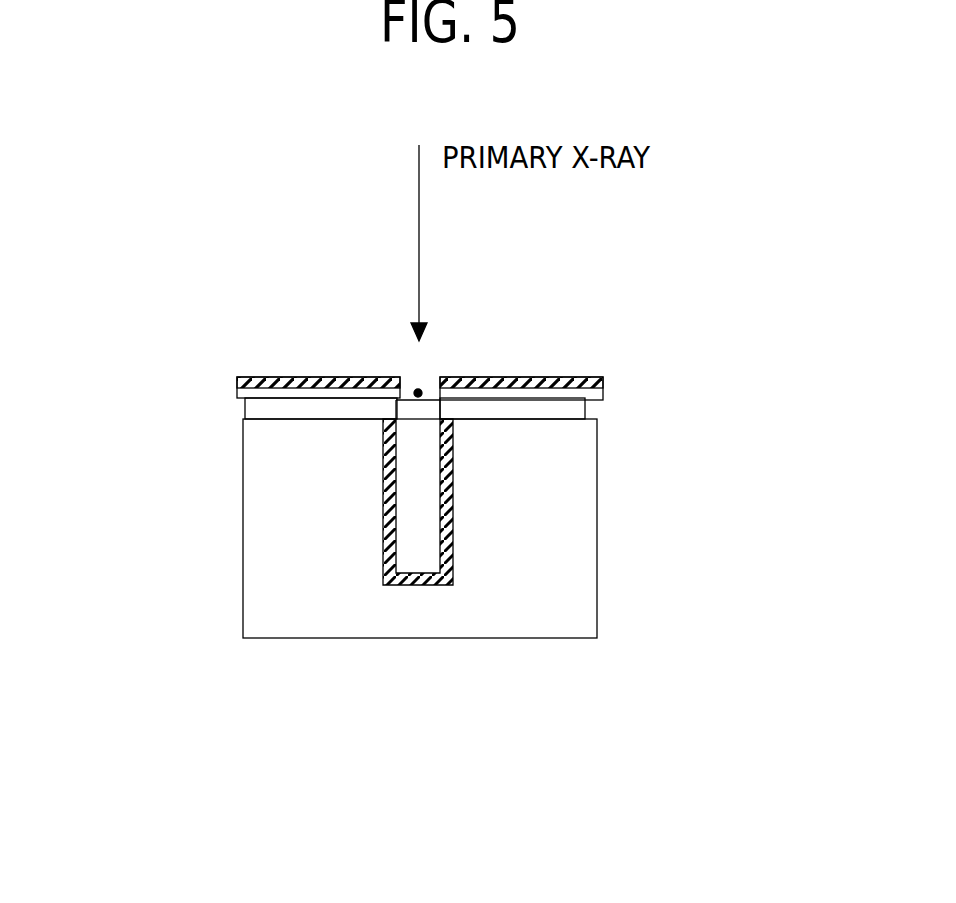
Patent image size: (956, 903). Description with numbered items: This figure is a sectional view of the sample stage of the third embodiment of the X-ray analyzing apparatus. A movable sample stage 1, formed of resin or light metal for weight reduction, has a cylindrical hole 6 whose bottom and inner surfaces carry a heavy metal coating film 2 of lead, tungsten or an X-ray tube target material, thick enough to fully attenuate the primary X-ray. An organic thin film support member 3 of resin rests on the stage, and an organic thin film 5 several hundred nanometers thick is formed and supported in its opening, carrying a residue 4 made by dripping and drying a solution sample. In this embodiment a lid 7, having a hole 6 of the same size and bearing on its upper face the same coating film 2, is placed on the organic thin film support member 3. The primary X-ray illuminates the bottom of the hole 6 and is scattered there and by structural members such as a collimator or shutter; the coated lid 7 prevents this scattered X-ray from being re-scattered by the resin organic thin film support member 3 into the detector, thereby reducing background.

The movable sample stage 1 is at (578, 537).
The heavy metal coating film 2 is at (383, 533).
The organic thin film support member 3 is at (572, 417).
The residue 4 is at (421, 390).
The organic thin film 5 is at (412, 400).
The hole 6 is at (417, 515).
The lid 7 is at (243, 377).